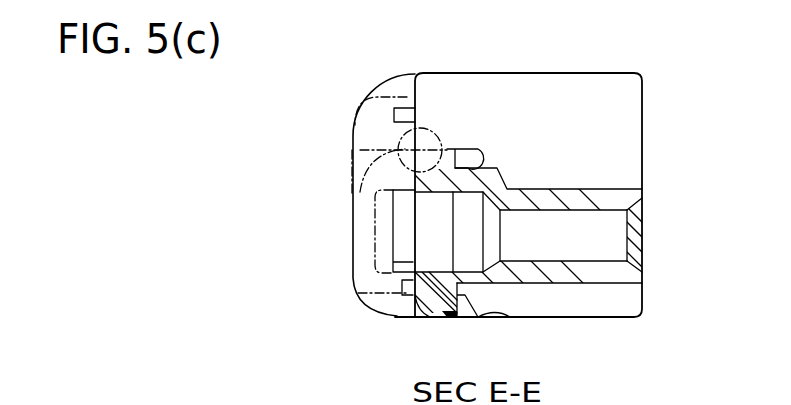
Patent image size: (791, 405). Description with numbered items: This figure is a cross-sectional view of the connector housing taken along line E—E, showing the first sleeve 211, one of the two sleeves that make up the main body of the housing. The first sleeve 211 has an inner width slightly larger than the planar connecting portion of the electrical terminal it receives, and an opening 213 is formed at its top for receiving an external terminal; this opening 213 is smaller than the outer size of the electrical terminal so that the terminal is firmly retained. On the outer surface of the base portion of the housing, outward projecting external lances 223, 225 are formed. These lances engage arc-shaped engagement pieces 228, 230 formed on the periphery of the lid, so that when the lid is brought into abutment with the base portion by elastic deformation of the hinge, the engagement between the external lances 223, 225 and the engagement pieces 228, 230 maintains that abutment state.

The first sleeve 211 is at (418, 233).
The opening 213 is at (642, 236).
The external lance 223 is at (416, 93).
The external lance 225 is at (400, 318).
The arc-shaped engagement piece 228 is at (490, 157).
The arc-shaped engagement piece 230 is at (510, 318).